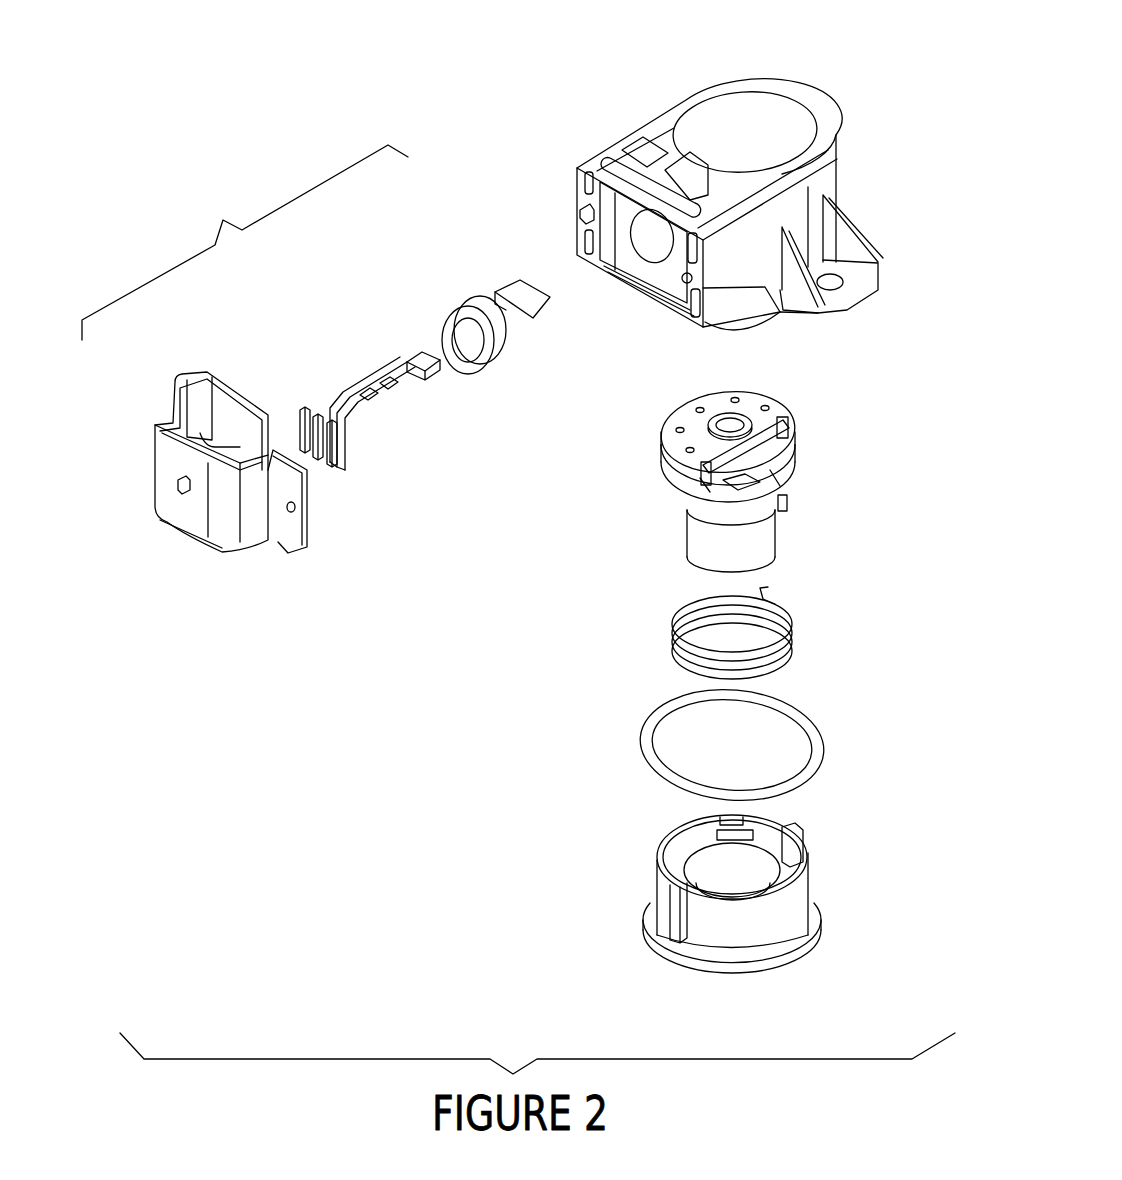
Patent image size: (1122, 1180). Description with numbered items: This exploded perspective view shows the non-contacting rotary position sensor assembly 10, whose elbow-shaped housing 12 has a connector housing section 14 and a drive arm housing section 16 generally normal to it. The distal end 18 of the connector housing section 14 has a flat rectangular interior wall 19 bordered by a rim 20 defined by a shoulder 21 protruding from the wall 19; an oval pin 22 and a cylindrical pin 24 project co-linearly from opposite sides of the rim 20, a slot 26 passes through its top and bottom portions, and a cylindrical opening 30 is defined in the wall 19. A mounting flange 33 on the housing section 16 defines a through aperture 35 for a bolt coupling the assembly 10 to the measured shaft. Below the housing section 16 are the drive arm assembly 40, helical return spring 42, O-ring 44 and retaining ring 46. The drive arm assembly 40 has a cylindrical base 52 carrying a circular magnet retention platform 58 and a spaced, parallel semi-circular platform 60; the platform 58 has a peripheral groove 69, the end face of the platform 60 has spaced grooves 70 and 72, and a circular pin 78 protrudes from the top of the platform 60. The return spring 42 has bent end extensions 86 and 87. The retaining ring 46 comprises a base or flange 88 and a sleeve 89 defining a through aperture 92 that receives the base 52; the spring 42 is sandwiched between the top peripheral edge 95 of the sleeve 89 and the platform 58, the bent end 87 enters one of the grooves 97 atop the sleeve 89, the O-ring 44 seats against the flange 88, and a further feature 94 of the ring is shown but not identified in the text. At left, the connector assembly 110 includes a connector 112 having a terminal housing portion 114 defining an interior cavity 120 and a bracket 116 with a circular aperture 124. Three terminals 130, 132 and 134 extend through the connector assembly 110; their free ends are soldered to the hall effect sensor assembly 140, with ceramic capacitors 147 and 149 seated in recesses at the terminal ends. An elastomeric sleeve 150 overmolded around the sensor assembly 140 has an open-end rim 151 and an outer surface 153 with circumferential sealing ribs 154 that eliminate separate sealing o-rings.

The non-contacting rotary position sensor assembly 10 is at (441, 684).
The housing 12 is at (700, 200).
The connector housing section 14 is at (717, 293).
The drive arm housing section 16 is at (817, 237).
The distal end 18 is at (578, 168).
The flat interior wall 19 is at (640, 263).
The lip or rim 20 is at (623, 192).
The shoulder 21 is at (583, 258).
The pin 22 is at (583, 213).
The pin 24 is at (680, 290).
The through aperture or slot 26 is at (612, 163).
The opening 30 is at (630, 240).
The mounting flange 33 is at (840, 310).
The through aperture 35 is at (830, 287).
The drive arm assembly 40 is at (738, 488).
The return spring 42 is at (783, 610).
The O-ring 44 is at (803, 717).
The retaining ring 46 is at (741, 922).
The cylindrical base 52 is at (700, 537).
The first magnet retention overmolded platform 58 is at (680, 498).
The second magnet retention overmold platform 60 is at (660, 435).
The groove 69 is at (790, 507).
The groove 70 is at (707, 510).
The groove 72 is at (793, 437).
The pin 78 is at (757, 413).
The bent distal end segment 86 is at (755, 587).
The bent distal end segment 87 is at (685, 638).
The base or flange 88 is at (797, 957).
The sleeve 89 is at (753, 947).
The through aperture 92 is at (710, 872).
The shoulder 94 is at (697, 968).
The top peripheral edge 95 is at (795, 832).
The grooves 97 is at (660, 870).
The connector assembly 110 is at (316, 397).
The connector 112 is at (222, 503).
The terminal housing portion 114 is at (207, 547).
The bracket or flange 116 is at (303, 550).
The interior cavity 120 is at (200, 405).
The aperture 124 is at (293, 507).
The terminal 130 is at (346, 379).
The terminal 132 is at (333, 403).
The terminal 134 is at (327, 400).
The sensor assembly 140 is at (412, 347).
The capacitor 147 is at (372, 373).
The capacitor 149 is at (393, 387).
The elastomeric protective sensor cover or sleeve 150 is at (433, 321).
The rim 151 is at (462, 372).
The outer surface 153 is at (460, 300).
The sealing ribs 154 is at (493, 367).